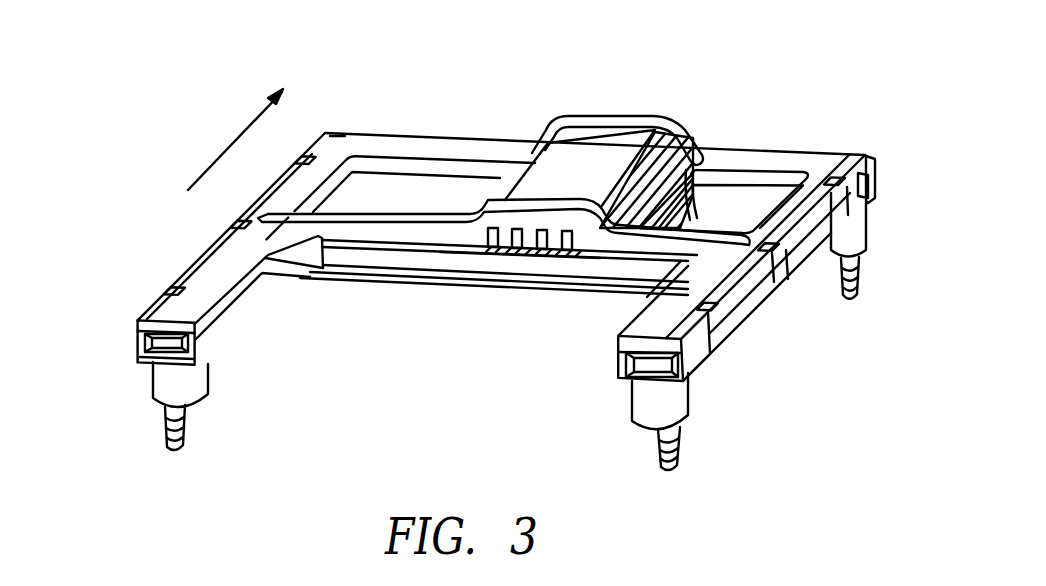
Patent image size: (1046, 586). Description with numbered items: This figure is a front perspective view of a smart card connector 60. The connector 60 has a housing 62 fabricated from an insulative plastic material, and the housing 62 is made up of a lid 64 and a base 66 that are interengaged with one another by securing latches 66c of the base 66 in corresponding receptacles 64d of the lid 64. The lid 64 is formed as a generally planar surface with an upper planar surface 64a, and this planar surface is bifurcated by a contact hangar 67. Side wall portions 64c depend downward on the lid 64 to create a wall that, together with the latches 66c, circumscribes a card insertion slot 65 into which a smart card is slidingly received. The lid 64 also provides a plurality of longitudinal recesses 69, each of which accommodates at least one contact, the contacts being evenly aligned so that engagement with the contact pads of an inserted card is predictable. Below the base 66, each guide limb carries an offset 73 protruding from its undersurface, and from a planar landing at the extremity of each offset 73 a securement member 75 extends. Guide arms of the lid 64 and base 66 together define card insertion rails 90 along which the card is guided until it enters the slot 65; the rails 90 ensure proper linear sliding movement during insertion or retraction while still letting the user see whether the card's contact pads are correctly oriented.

The smart card connector 60 is at (713, 70).
The housing 62 is at (851, 155).
The lid 64 is at (388, 140).
The upper planar surface 64a is at (334, 143).
The side wall portions 64c is at (805, 258).
The receptacles 64d is at (172, 290).
The card insertion slot 65 is at (432, 262).
The base 66 is at (135, 359).
The latches 66c is at (707, 330).
The contact hangar 67 is at (580, 150).
The longitudinal recesses 69 is at (518, 246).
The offset 73 is at (168, 394).
The securement member 75 is at (170, 445).
The card insertion rails 90 is at (226, 302).